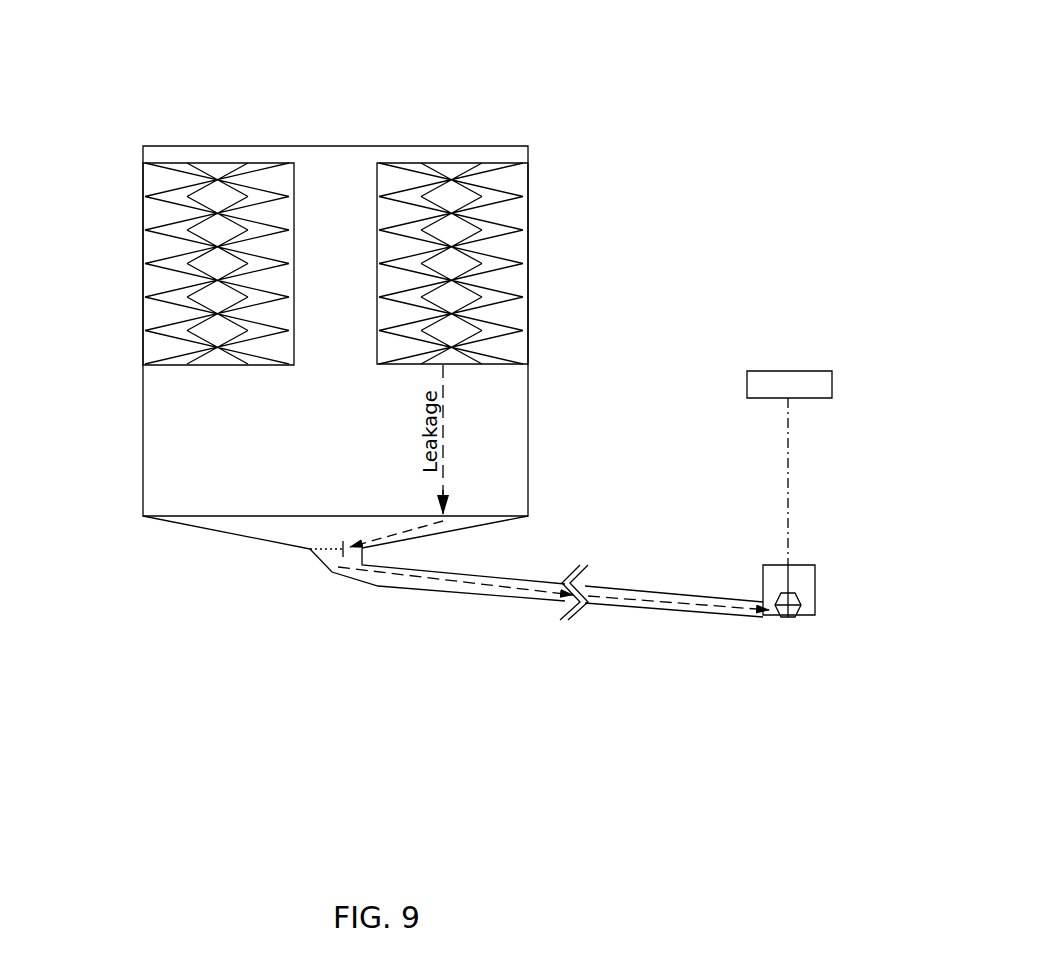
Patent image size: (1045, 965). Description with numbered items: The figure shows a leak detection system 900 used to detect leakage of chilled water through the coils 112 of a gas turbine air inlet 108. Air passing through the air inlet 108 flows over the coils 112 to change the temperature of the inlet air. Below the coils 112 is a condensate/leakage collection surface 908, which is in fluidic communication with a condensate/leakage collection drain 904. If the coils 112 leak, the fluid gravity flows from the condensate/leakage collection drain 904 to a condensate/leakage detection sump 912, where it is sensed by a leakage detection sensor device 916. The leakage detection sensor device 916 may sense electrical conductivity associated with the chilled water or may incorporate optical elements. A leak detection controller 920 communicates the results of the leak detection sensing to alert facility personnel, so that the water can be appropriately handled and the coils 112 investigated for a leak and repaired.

The leak detection system 900 is at (672, 160).
The air inlet 108 is at (330, 142).
The coils 112 is at (143, 252).
The condensate/leakage collection surface 908 is at (277, 532).
The condensate/leakage collection drain 904 is at (318, 553).
The leak detection controller 920 is at (799, 368).
The condensate/leakage detection sump 912 is at (815, 597).
The leakage detection sensor device 916 is at (788, 622).